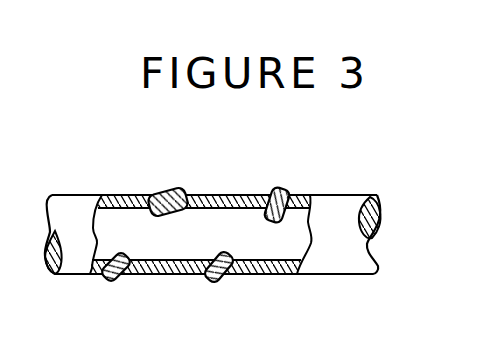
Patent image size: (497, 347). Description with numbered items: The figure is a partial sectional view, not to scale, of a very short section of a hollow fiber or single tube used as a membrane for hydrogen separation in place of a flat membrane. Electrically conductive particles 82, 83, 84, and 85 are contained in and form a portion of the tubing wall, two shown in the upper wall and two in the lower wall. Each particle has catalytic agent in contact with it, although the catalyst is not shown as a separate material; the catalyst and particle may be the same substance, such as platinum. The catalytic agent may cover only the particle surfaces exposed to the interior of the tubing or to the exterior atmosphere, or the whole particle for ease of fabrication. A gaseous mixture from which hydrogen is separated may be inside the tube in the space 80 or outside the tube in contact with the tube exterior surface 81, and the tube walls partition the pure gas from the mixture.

The space 80 is at (221, 239).
The tube exterior surface 81 is at (316, 195).
The particle 82 is at (272, 187).
The particle 83 is at (165, 188).
The particle 84 is at (230, 282).
The particle 85 is at (112, 282).